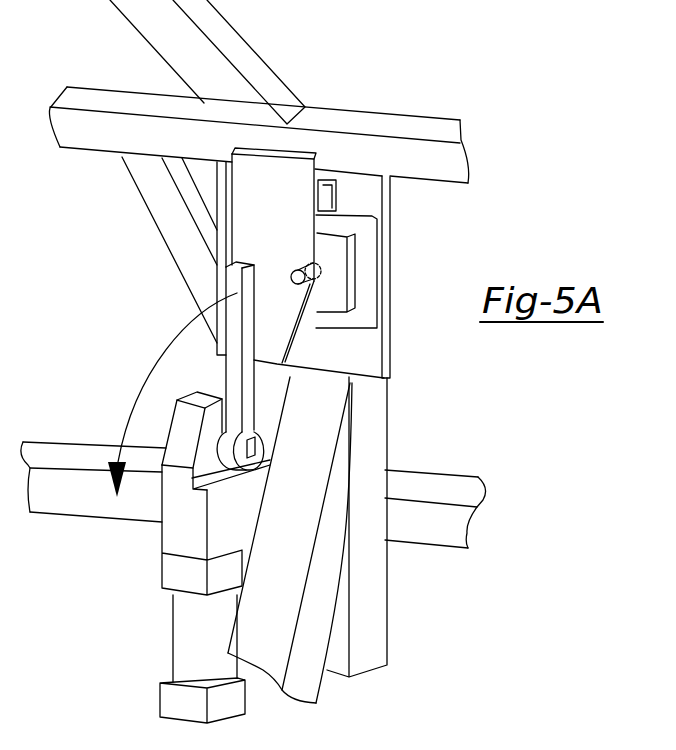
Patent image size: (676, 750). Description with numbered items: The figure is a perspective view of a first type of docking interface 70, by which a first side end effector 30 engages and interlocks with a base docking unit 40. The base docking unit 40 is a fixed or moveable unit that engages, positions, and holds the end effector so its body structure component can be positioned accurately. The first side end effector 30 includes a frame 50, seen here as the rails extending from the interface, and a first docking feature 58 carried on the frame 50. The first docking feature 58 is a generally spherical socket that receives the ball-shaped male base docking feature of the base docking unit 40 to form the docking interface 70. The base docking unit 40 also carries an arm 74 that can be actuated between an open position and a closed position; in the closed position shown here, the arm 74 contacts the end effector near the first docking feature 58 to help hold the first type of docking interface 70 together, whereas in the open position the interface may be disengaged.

The first side end effector 30 is at (350, 100).
The base docking unit 40 is at (402, 610).
The frame 50 is at (95, 147).
The first docking feature 58 is at (281, 223).
The first type of docking interface 70 is at (402, 212).
The arm 74 is at (236, 360).